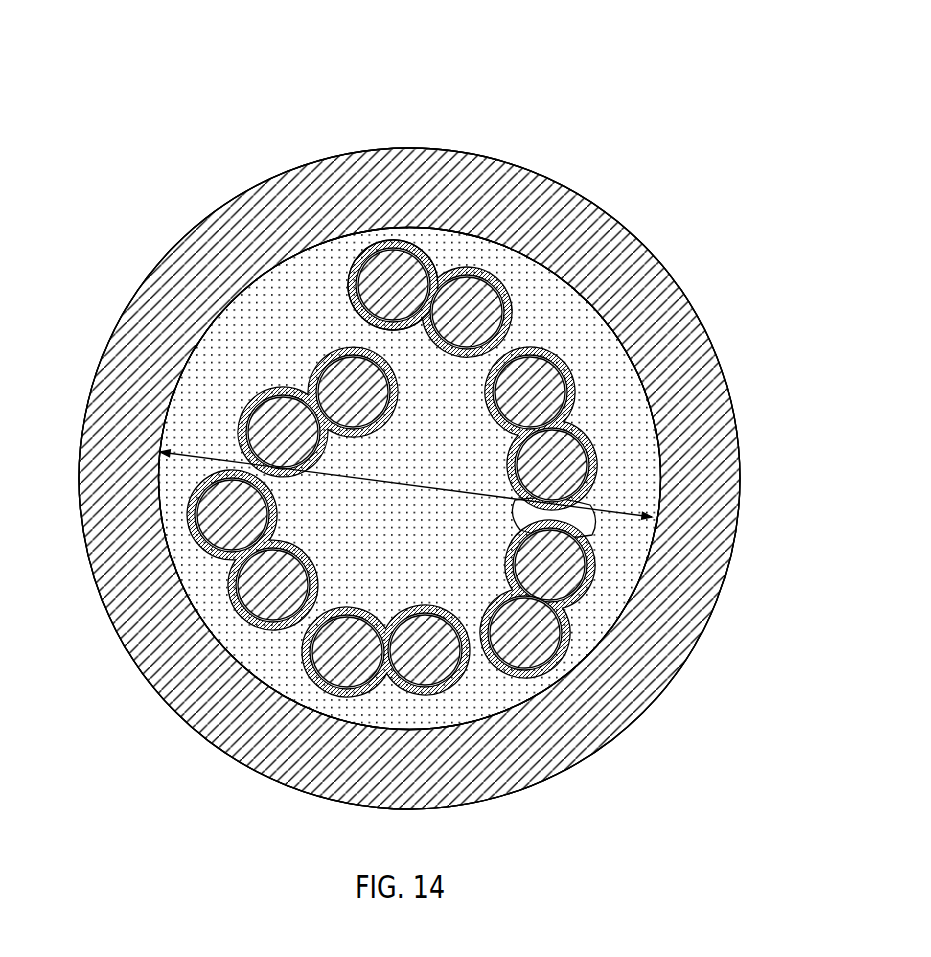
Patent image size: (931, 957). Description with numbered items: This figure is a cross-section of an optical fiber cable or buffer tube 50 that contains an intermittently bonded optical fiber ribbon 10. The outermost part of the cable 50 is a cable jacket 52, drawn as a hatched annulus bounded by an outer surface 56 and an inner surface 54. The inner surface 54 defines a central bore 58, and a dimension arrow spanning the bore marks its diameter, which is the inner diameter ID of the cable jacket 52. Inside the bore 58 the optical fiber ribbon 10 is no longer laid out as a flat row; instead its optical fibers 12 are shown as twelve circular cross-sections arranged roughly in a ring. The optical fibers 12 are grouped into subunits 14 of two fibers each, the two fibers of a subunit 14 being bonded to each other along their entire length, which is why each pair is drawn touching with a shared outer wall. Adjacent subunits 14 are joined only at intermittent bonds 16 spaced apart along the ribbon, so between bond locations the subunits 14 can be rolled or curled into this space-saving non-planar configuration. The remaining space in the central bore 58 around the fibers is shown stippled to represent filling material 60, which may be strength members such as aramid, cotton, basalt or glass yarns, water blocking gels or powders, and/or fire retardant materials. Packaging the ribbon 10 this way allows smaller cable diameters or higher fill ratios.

The optical fiber ribbon 10 is at (394, 399).
The optical fibers 12 is at (464, 233).
The subunits 14 is at (390, 236).
The intermittent bonds 16 is at (590, 525).
The optical fiber cable 50 is at (152, 177).
The cable jacket 52 is at (645, 268).
The inner surface 54 is at (620, 607).
The outer surface 56 is at (547, 783).
The central bore 58 is at (268, 655).
The filling material 60 is at (200, 565).
The inner diameter ID is at (637, 514).